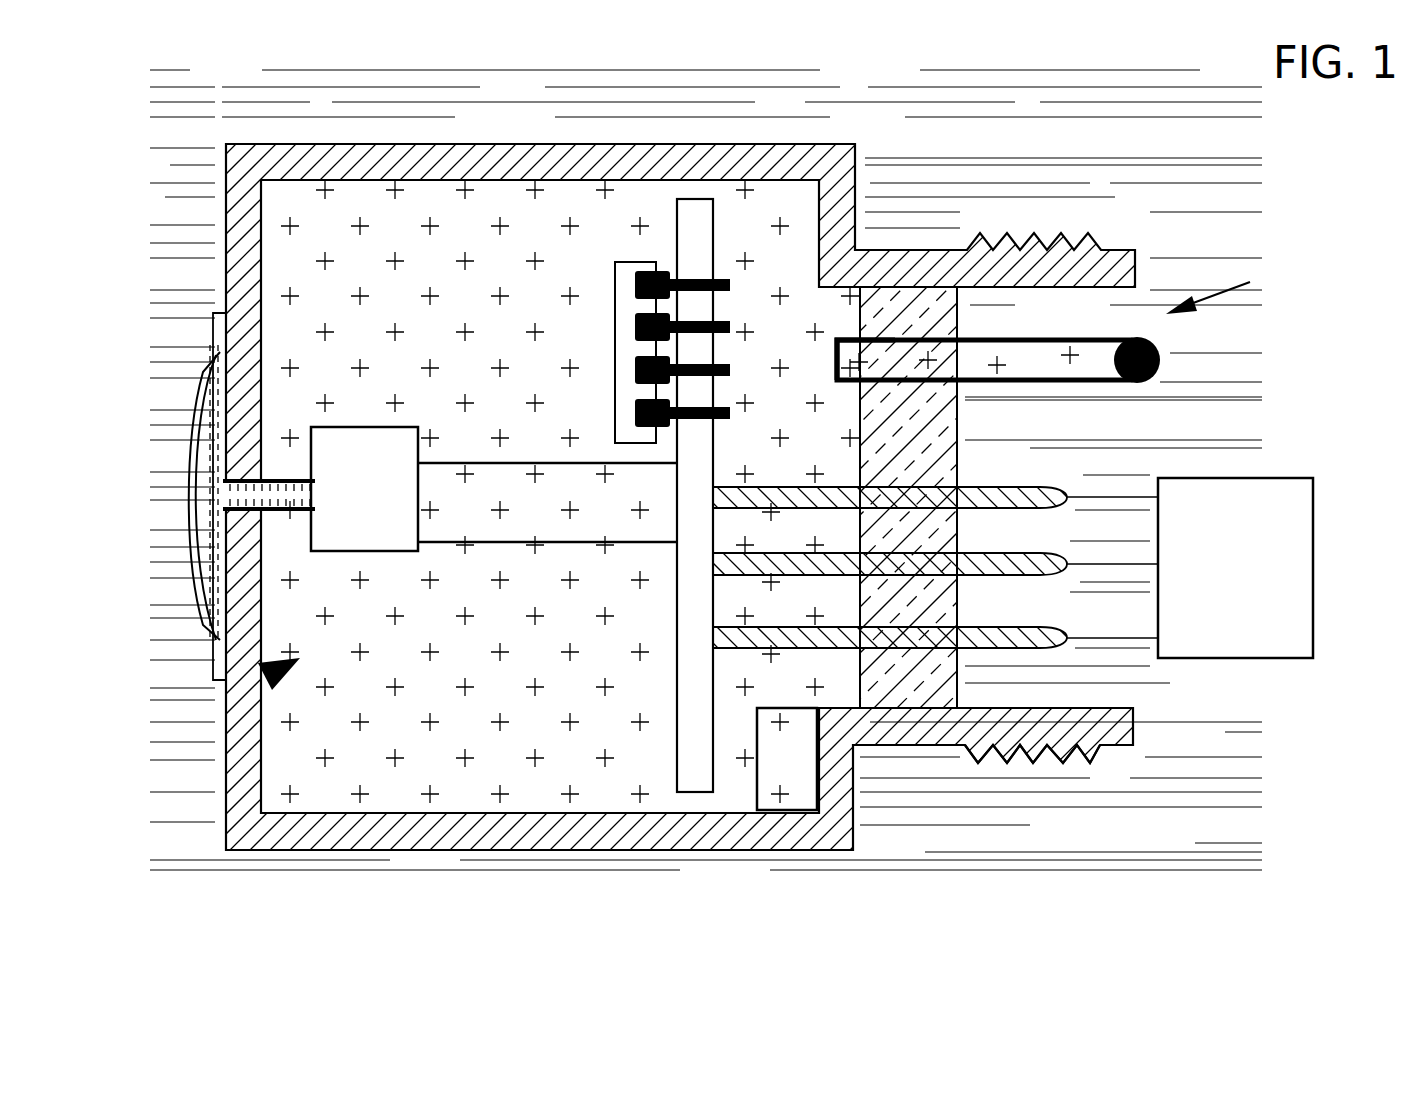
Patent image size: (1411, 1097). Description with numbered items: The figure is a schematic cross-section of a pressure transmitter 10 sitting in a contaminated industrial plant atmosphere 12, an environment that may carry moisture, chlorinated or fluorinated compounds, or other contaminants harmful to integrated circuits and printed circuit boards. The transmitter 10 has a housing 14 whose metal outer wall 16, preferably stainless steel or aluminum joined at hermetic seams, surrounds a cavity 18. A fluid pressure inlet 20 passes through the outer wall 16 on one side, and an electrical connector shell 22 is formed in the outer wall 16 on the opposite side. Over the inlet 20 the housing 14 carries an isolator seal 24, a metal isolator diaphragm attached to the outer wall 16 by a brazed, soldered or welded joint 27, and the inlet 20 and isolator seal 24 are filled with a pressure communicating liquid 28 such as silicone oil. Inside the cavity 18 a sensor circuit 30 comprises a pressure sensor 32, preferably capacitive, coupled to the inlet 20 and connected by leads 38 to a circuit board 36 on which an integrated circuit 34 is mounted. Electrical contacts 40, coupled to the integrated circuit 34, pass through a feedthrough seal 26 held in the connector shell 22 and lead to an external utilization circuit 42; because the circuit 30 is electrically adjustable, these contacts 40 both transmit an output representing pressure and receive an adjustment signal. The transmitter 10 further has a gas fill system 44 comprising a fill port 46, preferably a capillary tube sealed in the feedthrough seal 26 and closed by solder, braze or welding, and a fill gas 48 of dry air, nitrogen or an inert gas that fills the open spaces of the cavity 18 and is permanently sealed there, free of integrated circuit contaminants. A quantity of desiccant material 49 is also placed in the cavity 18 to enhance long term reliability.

The pressure transmitter 10 is at (705, 450).
The contaminated industrial plant atmosphere 12 is at (706, 470).
The housing 14 is at (705, 450).
The outer wall 16 is at (567, 836).
The cavity 18 is at (570, 492).
The fluid pressure inlet 20 is at (262, 473).
The electrical connector shell 22 is at (1010, 757).
The isolator seal 24 is at (190, 483).
The feedthrough seal 26 is at (905, 450).
The joint 27 is at (222, 332).
The pressure communicating liquid 28 is at (212, 485).
The sensor circuit 30 is at (265, 676).
The pressure sensor 32 is at (364, 489).
The integrated circuit 34 is at (622, 373).
The circuit board 36 is at (688, 598).
The leads 38 is at (483, 541).
The electrical contacts 40 is at (1020, 640).
The utilization circuit 42 is at (1235, 568).
The gas fill system 44 is at (1225, 285).
The fill port 46 is at (1065, 383).
The fill gas 48 is at (895, 363).
The desiccant material 49 is at (787, 759).